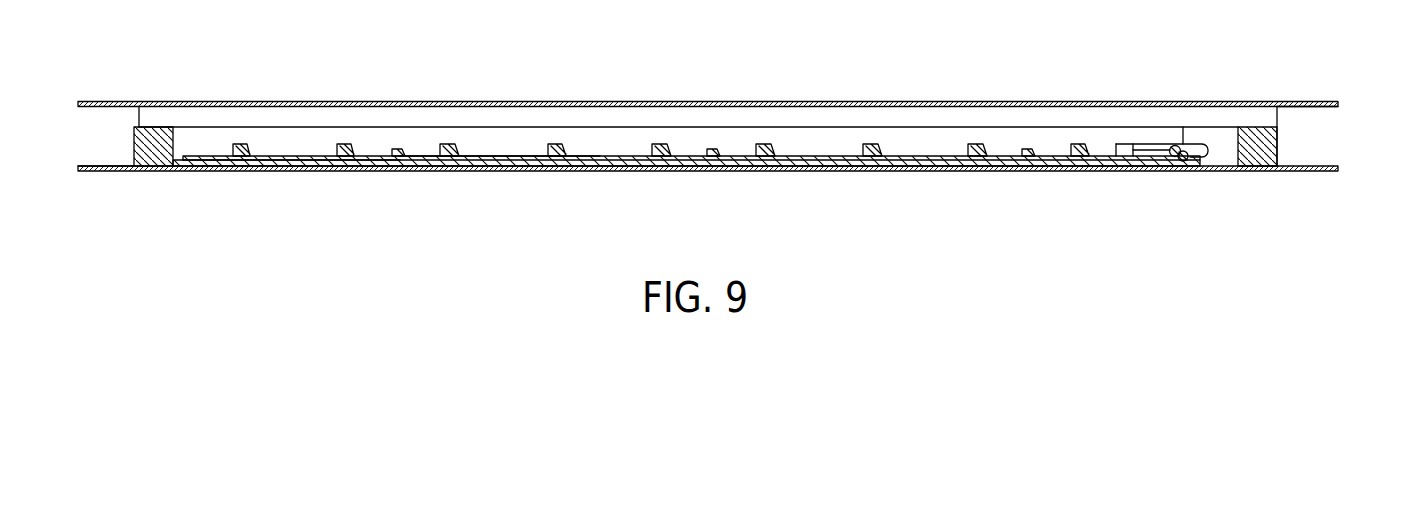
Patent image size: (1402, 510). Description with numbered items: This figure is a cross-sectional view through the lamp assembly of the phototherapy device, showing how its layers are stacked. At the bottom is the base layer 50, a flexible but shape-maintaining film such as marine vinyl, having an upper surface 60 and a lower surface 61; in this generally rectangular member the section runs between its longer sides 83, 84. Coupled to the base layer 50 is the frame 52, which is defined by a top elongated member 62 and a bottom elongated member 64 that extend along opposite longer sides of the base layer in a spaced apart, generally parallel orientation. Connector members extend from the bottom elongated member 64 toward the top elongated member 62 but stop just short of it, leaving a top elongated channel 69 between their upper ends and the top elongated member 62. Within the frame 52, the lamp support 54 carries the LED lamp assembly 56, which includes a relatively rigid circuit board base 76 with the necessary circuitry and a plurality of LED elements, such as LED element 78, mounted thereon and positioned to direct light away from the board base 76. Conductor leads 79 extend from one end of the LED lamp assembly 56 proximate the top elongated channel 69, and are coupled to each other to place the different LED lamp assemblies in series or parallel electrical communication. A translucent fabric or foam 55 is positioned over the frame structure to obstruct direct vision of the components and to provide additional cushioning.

The base layer 50 is at (88, 174).
The frame 52 is at (1279, 127).
The lamp support 54 is at (268, 171).
The translucent fabric or foam 55 is at (600, 120).
The LED lamp assembly 56 is at (488, 158).
The upper surface 60 is at (112, 166).
The lower surface 61 is at (128, 171).
The top elongated member 62 is at (1256, 171).
The bottom elongated member 64 is at (152, 146).
The top elongated channel 69 is at (1223, 146).
The circuit board base 76 is at (295, 160).
The LED element 78 is at (348, 155).
The conductor leads 79 is at (1198, 171).
The longer side 83 is at (89, 118).
The longer side 84 is at (1314, 137).